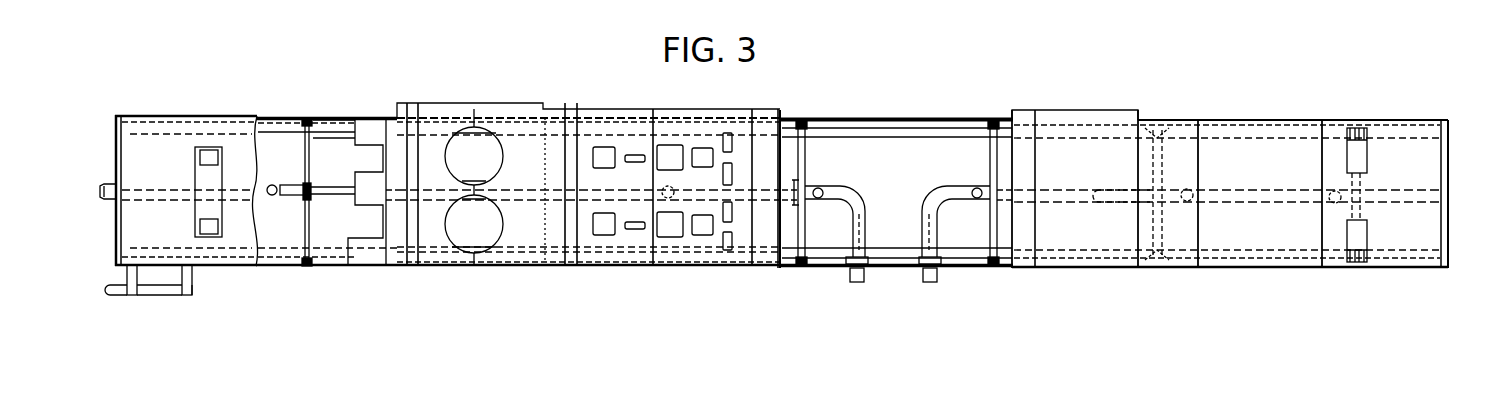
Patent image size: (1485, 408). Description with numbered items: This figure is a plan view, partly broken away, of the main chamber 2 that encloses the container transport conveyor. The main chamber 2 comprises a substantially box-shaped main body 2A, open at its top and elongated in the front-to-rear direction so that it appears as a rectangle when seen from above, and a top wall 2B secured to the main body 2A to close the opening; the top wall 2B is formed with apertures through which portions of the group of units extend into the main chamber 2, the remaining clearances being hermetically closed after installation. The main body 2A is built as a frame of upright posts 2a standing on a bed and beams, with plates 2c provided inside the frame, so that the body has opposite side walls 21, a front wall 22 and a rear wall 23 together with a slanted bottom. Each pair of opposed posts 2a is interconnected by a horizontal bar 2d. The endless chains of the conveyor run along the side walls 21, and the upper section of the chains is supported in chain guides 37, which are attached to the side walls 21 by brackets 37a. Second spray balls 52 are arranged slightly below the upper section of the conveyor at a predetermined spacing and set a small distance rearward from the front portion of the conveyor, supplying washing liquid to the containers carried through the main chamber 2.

The main chamber 2 is at (300, 94).
The main body 2A is at (296, 237).
The top wall 2B is at (176, 208).
The upright posts 2a is at (307, 118).
The plates 2c is at (947, 117).
The horizontal bar 2d is at (306, 157).
The side walls 21 is at (831, 110).
The front wall 22 is at (106, 227).
The rear wall 23 is at (1457, 152).
The chain guides 37 is at (887, 135).
The brackets 37a is at (327, 121).
The second spray balls 52 is at (268, 194).